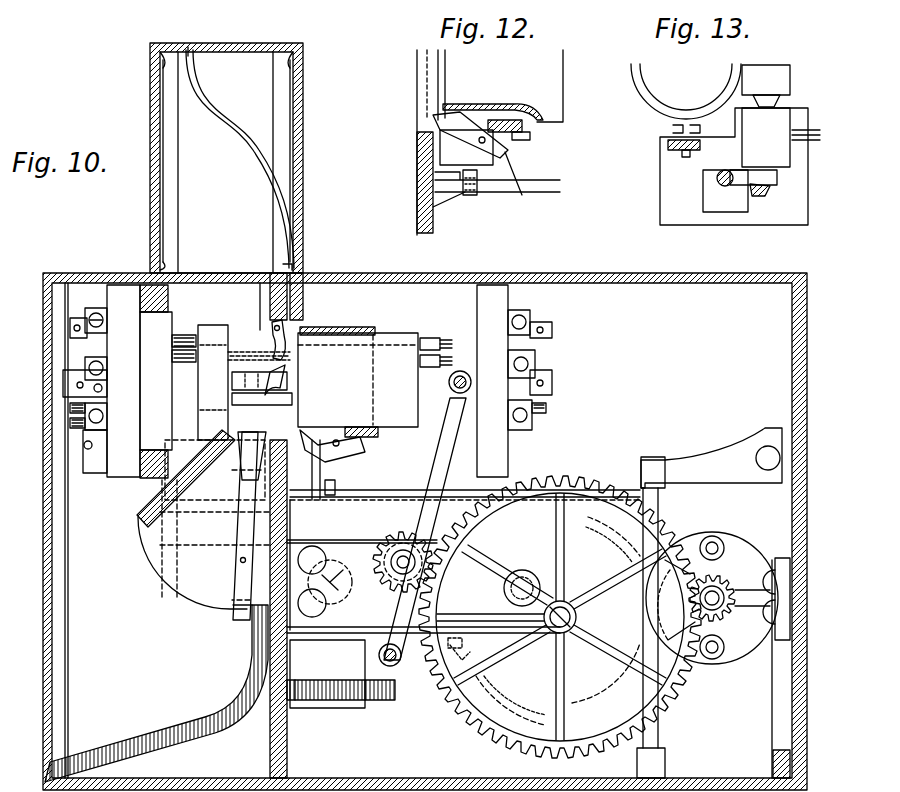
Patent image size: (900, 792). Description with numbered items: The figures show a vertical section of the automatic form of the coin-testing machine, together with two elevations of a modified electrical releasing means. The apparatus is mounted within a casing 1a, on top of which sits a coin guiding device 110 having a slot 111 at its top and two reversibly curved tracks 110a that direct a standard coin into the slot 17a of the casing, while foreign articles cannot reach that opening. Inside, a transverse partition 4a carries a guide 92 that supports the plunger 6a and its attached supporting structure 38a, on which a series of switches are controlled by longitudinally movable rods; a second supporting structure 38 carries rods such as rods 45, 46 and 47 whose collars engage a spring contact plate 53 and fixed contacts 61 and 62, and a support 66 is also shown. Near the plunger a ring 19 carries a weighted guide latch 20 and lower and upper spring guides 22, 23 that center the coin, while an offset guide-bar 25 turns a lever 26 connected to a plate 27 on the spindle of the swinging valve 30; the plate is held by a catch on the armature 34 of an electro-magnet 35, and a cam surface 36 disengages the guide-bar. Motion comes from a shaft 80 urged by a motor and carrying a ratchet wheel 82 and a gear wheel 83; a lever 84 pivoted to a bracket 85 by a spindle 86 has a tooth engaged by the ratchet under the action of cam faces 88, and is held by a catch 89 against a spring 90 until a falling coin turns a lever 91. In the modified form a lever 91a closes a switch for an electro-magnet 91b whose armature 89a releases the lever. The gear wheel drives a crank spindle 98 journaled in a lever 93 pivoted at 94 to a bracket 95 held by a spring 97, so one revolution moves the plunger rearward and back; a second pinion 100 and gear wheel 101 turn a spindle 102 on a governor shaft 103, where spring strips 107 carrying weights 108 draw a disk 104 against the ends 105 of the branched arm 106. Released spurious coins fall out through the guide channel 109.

In FIG. 10, the casing 1a is at (590, 283).
In FIG. 10, the transverse partition 4a is at (272, 302).
In FIG. 12, the transverse partition 4a is at (420, 180).
In FIG. 10, the plunger 6a is at (358, 380).
In FIG. 12, the plunger 6a is at (503, 86).
In FIG. 13, the plunger 6a is at (686, 98).
In FIG. 10, the slot 17a is at (282, 266).
In FIG. 10, the ring 19 is at (282, 380).
In FIG. 10, the guide latch 20 is at (296, 318).
In FIG. 10, the lower spring guides 22 is at (252, 454).
In FIG. 10, the upper spring guides 23 is at (252, 352).
In FIG. 10, the guide-bar 25 is at (292, 398).
In FIG. 10, the lever 26 is at (268, 372).
In FIG. 10, the plate 27 is at (238, 540).
In FIG. 10, the valve 30 is at (250, 525).
In FIG. 10, the armature 34 is at (194, 505).
In FIG. 10, the electro-magnet 35 is at (201, 478).
In FIG. 10, the cam surface 36 is at (334, 578).
In FIG. 10, the supporting structure 38 is at (139, 381).
In FIG. 10, the supporting structure 38a is at (492, 381).
In FIG. 10, the rod 45 is at (78, 328).
In FIG. 10, the rod 46 is at (68, 406).
In FIG. 10, the rod 47 is at (68, 424).
In FIG. 10, the spring contact plate 53 is at (62, 380).
In FIG. 10, the fixed contact 61 is at (104, 416).
In FIG. 10, the fixed contact 62 is at (104, 370).
In FIG. 10, the support 66 is at (97, 470).
In FIG. 10, the shaft 80 is at (535, 588).
In FIG. 10, the ratchet wheel 82 is at (606, 528).
In FIG. 10, the gear wheel 83 is at (604, 680).
In FIG. 10, the lever 84 is at (390, 490).
In FIG. 12, the lever 84 is at (535, 190).
In FIG. 13, the lever 84 is at (760, 196).
In FIG. 10, the supporting bracket 85 is at (738, 452).
In FIG. 10, the spindle 86 is at (660, 740).
In FIG. 10, the cam faces 88 is at (466, 648).
In FIG. 10, the catch 89 is at (321, 470).
In FIG. 12, the armature 89a is at (476, 196).
In FIG. 13, the armature 89a is at (778, 180).
In FIG. 10, the spring 90 is at (318, 500).
In FIG. 10, the lever 91 is at (366, 448).
In FIG. 12, the lever 91a is at (525, 196).
In FIG. 13, the lever 91a is at (675, 157).
In FIG. 12, the electro-magnet 91b is at (450, 140).
In FIG. 13, the electro-magnet 91b is at (781, 116).
In FIG. 10, the guide 92 is at (335, 330).
In FIG. 12, the guide 92 is at (530, 138).
In FIG. 13, the guide 92 is at (640, 110).
In FIG. 10, the lever 93 is at (425, 470).
In FIG. 10, the pivot 94 is at (398, 668).
In FIG. 10, the bracket 95 is at (327, 674).
In FIG. 10, the spring 97 is at (290, 685).
In FIG. 10, the crank spindle 98 is at (403, 530).
In FIG. 10, the second pinion 100 is at (380, 540).
In FIG. 10, the gear wheel 101 is at (470, 722).
In FIG. 10, the spindle 102 is at (730, 606).
In FIG. 10, the governor shaft 103 is at (725, 643).
In FIG. 10, the disk 104 is at (715, 536).
In FIG. 10, the ends 105 is at (700, 546).
In FIG. 10, the branched arm 106 is at (680, 600).
In FIG. 10, the spring strips 107 is at (748, 588).
In FIG. 10, the weight 108 is at (765, 560).
In FIG. 10, the guide channel 109 is at (158, 728).
In FIG. 10, the coin guiding device 110 is at (295, 133).
In FIG. 10, the curved tracks 110a is at (238, 134).
In FIG. 10, the slot 111 is at (190, 45).